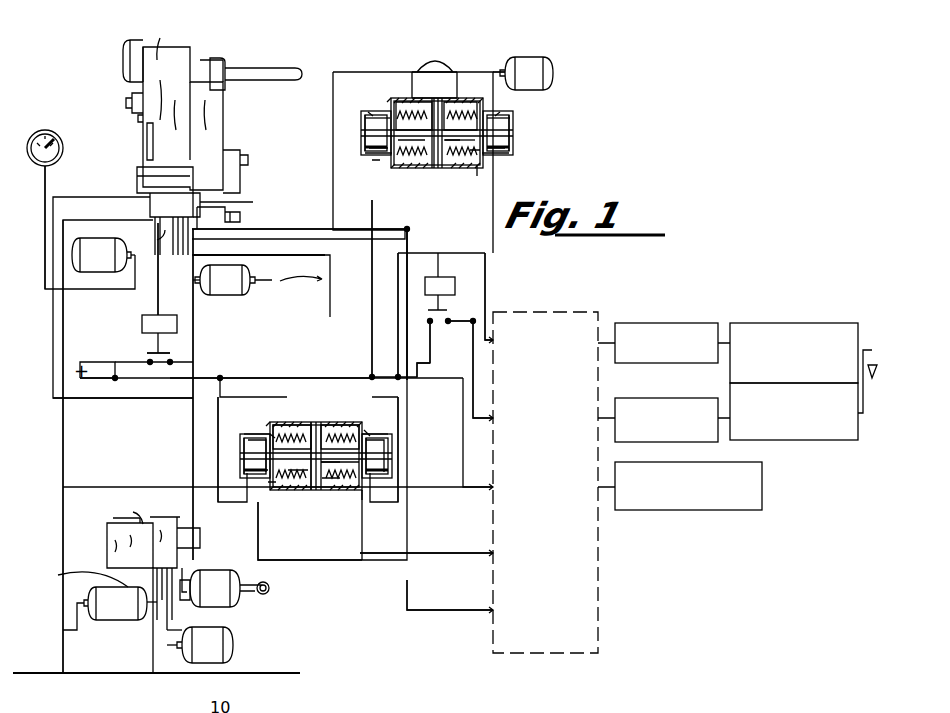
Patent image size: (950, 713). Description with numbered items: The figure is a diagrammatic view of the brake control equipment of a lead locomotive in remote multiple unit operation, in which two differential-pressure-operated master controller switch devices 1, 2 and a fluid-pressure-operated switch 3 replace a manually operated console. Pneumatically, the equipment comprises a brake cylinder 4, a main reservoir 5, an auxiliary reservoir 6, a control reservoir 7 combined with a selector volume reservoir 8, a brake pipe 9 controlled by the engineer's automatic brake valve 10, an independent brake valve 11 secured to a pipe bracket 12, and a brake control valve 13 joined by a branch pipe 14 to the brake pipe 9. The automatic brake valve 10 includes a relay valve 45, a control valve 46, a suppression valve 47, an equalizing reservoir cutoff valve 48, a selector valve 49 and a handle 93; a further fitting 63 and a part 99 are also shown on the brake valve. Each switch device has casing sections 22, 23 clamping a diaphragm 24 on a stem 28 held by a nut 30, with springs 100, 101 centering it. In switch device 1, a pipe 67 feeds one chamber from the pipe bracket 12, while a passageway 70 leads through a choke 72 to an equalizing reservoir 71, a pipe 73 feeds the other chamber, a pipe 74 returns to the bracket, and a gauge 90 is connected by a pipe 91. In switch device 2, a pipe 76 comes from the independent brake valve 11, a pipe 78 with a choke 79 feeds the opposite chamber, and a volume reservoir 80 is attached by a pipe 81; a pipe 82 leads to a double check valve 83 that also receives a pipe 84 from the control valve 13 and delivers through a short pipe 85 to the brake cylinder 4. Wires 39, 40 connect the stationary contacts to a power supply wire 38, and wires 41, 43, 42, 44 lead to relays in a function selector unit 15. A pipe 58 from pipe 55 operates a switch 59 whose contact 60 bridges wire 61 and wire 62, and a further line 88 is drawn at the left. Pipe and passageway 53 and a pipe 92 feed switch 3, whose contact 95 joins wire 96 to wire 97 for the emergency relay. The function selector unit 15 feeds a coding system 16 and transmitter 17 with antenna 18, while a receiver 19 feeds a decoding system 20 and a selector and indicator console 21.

The differential-pressure-operated master controller switch device 1 is at (323, 420).
The differential-pressure-operated master controller switch device 2 is at (456, 178).
The fluid-pressure-operated switch 3 is at (137, 320).
The brake cylinder 4 is at (238, 599).
The main reservoir 5 is at (195, 298).
The auxiliary reservoir 6 is at (224, 630).
The control reservoir 7 is at (88, 590).
The selector volume reservoir 8 is at (132, 574).
The brake pipe 9 is at (318, 670).
The engineer's automatic brake valve 10 is at (222, 120).
The independent brake valve 11 is at (247, 219).
The pipe bracket 12 is at (160, 206).
The fluid pressure brake control valve 13 is at (170, 505).
The branch pipe 14 is at (153, 662).
The function selector unit 15 is at (577, 307).
The coding system 16 is at (685, 394).
The radio transmitter 17 is at (815, 444).
The antenna 18 is at (875, 356).
The radio receiver 19 is at (813, 320).
The decoding system 20 is at (681, 320).
The selector and indicator console 21 is at (729, 529).
The cuplike casing section 22 is at (290, 485).
The cuplike casing section 23 is at (360, 490).
The diaphragm 24 is at (318, 485).
The stem 28 is at (325, 484).
The nut 30 is at (311, 480).
The positive power supply wire 38 is at (112, 381).
The wire 39 is at (218, 410).
The wire 40 is at (398, 283).
The wire 41 is at (287, 560).
The wire 42 is at (473, 424).
The wire 43 is at (362, 544).
The wire 44 is at (485, 283).
The relay valve 45 is at (123, 51).
The self-lapping regulating or control valve 46 is at (137, 123).
The suppression valve 47 is at (142, 154).
The equalizing reservoir cutoff valve 48 is at (133, 179).
The manually positionable selector valve 49 is at (250, 172).
The pipe and passageway 53 is at (193, 284).
The pipe 55 is at (193, 432).
The pipe 58 is at (444, 241).
The fluid-pressure-operated switch 59 is at (424, 282).
The normally open contact 60 is at (445, 306).
The wire 61 is at (417, 345).
The wire 62 is at (450, 323).
The pipe 63 is at (252, 200).
The pipe 67 is at (136, 402).
The passageway 70 is at (163, 242).
The equalizing reservoir 71 is at (92, 274).
The choke 72 is at (175, 248).
The pipe 73 is at (326, 251).
The pipe 74 is at (155, 229).
The pipe 76 is at (319, 218).
The pipe 78 is at (436, 74).
The choke 79 is at (440, 84).
The volume reservoir 80 is at (556, 76).
The pipe 81 is at (492, 72).
The pipe 82 is at (410, 236).
The double check valve 83 is at (190, 600).
The pipe 84 is at (178, 622).
The short pipe 85 is at (193, 576).
The pipe 88 is at (63, 440).
The equalizing reservoir pressure gauge 90 is at (56, 126).
The pipe 91 is at (45, 206).
The pipe 92 is at (158, 300).
The handle 93 is at (279, 67).
The normally open contact 95 is at (151, 354).
The wire 96 is at (115, 362).
The wire 97 is at (188, 378).
The brake valve knob 99 is at (124, 103).
The spring 100 is at (274, 492).
The spring 101 is at (329, 490).